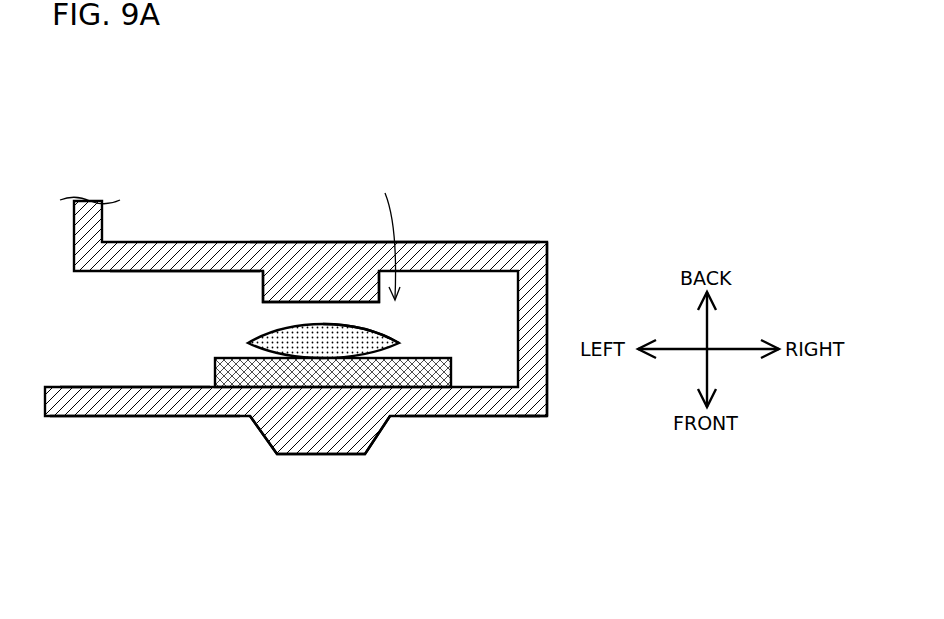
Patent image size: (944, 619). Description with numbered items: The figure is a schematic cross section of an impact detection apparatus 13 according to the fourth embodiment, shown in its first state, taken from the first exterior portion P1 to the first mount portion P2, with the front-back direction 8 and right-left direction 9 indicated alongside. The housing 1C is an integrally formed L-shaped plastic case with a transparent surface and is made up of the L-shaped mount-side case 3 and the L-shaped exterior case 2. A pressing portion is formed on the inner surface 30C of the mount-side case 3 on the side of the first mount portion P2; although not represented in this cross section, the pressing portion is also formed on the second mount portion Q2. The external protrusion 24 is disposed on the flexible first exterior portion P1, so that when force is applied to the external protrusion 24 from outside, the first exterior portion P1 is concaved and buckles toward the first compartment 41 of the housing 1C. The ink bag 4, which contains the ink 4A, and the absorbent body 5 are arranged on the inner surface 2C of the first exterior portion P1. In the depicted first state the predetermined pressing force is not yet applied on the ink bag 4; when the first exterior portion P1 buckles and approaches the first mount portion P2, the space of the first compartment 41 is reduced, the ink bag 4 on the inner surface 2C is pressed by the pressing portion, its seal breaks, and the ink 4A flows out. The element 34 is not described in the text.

The mount-side case 3 is at (214, 156).
The second mount portion Q2 is at (110, 216).
The inner surface 30C is at (196, 278).
The ink bag 4 is at (290, 323).
The lens holding portion 34 is at (316, 287).
The ink 4A is at (373, 323).
The first compartment 41 is at (380, 235).
The absorbent body 5 is at (449, 356).
The first mount portion P2 is at (490, 242).
The impact detection apparatus 13 is at (586, 235).
The front-back direction 8 is at (705, 322).
The right-left direction 9 is at (742, 346).
The exterior case 2 is at (152, 458).
The inner surface 2C is at (190, 378).
The external protrusion 24 is at (256, 438).
The first exterior portion P1 is at (462, 417).
The housing 1C is at (528, 417).